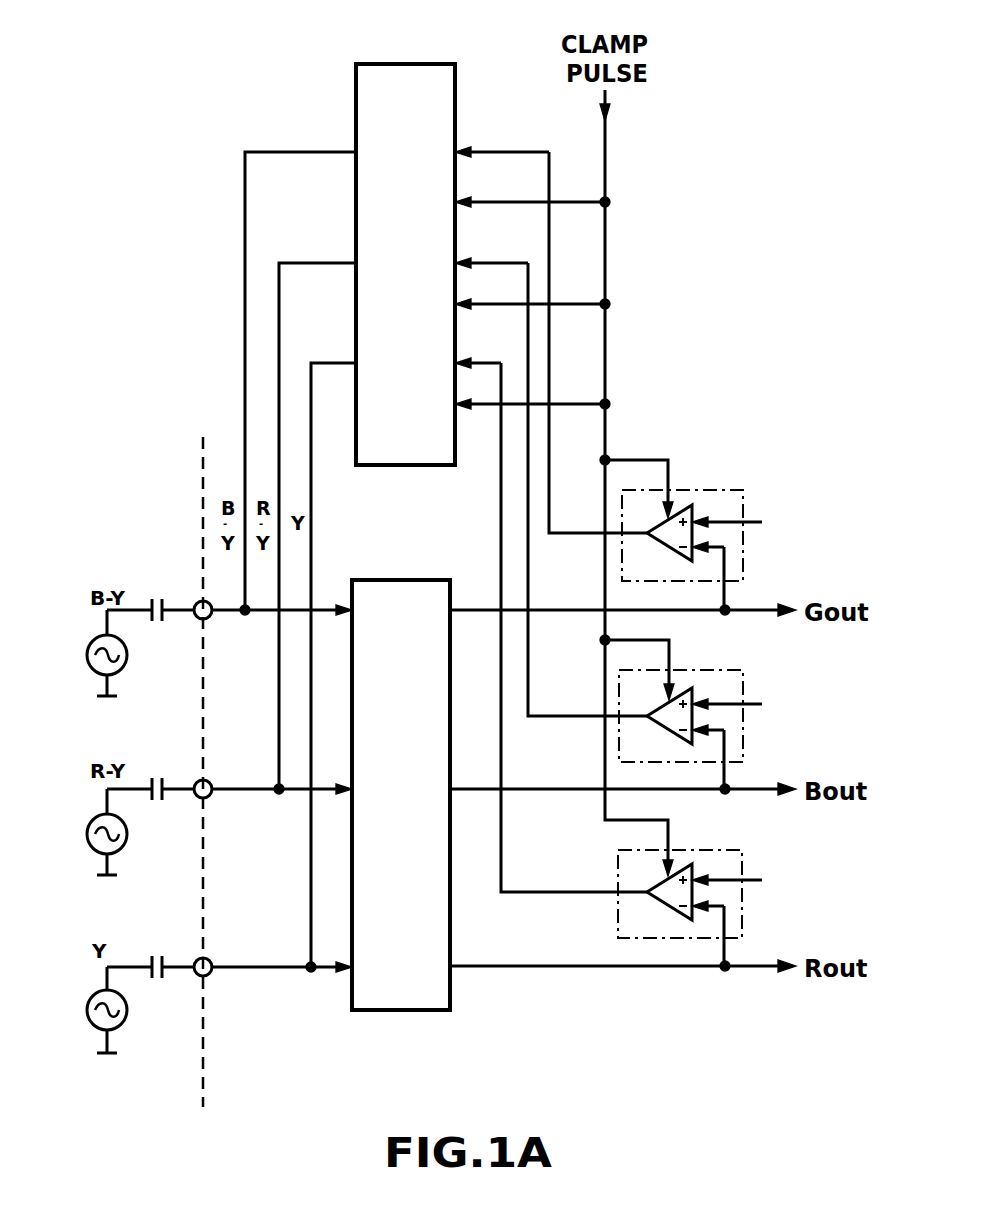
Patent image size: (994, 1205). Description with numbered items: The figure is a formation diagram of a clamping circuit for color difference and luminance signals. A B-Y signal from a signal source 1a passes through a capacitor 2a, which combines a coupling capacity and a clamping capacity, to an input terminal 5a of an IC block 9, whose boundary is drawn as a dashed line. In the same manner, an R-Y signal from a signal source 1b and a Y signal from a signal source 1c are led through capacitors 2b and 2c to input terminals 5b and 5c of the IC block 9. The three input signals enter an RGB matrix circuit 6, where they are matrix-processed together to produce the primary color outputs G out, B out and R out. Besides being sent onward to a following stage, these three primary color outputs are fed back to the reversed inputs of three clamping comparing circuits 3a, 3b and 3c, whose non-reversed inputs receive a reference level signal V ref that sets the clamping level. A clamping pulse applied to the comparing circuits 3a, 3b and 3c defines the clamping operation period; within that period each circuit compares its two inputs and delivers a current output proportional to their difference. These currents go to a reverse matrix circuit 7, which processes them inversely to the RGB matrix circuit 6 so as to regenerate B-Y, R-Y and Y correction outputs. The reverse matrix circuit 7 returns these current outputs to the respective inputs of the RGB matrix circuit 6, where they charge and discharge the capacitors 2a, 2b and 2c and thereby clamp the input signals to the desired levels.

The signal source 1a is at (88, 648).
The signal source 1b is at (88, 827).
The signal source 1c is at (88, 1006).
The capacitor 2a is at (158, 598).
The capacitor 2b is at (158, 777).
The capacitor 2c is at (158, 955).
The comparing circuit 3a is at (681, 490).
The comparing circuit 3b is at (696, 670).
The comparing circuit 3c is at (700, 850).
The input terminal 5a is at (200, 620).
The input terminal 5b is at (200, 799).
The input terminal 5c is at (200, 977).
The RGB matrix circuit 6 is at (419, 579).
The reverse matrix circuit 7 is at (456, 106).
The IC block 9 is at (201, 1058).